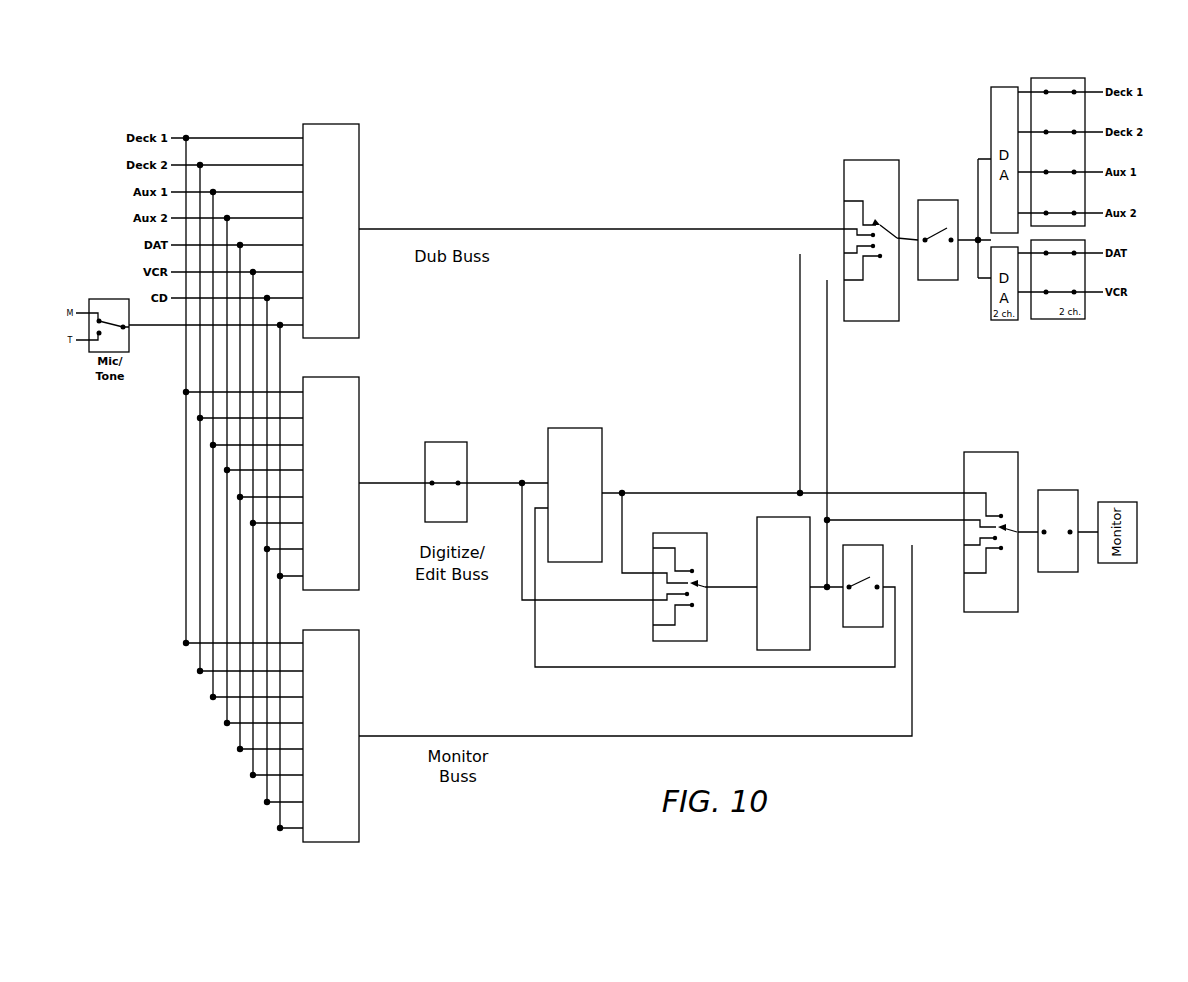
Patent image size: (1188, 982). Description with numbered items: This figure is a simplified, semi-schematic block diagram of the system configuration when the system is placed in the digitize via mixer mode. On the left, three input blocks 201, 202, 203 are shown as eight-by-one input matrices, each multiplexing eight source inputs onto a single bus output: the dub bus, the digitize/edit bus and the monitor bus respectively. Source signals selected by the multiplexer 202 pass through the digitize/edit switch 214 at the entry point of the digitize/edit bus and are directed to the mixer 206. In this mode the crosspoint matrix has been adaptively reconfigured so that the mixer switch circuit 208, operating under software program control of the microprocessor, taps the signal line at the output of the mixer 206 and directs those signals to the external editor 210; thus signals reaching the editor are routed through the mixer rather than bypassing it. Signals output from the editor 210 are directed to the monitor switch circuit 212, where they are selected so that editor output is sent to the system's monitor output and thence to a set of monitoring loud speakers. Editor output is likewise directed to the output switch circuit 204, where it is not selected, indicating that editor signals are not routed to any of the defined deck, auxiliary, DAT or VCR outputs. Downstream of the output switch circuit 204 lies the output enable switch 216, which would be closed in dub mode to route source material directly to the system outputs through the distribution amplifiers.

The input block 201 is at (360, 173).
The multiplexer 202 is at (395, 415).
The input block 203 is at (360, 680).
The output switch circuit 204 is at (893, 132).
The mixer 206 is at (598, 400).
The mixer switch circuit 208 is at (695, 533).
The external editor 210 is at (790, 517).
The monitor switch circuit 212 is at (1010, 430).
The digitize/edit switch 214 is at (458, 412).
The output enable switch 216 is at (958, 176).